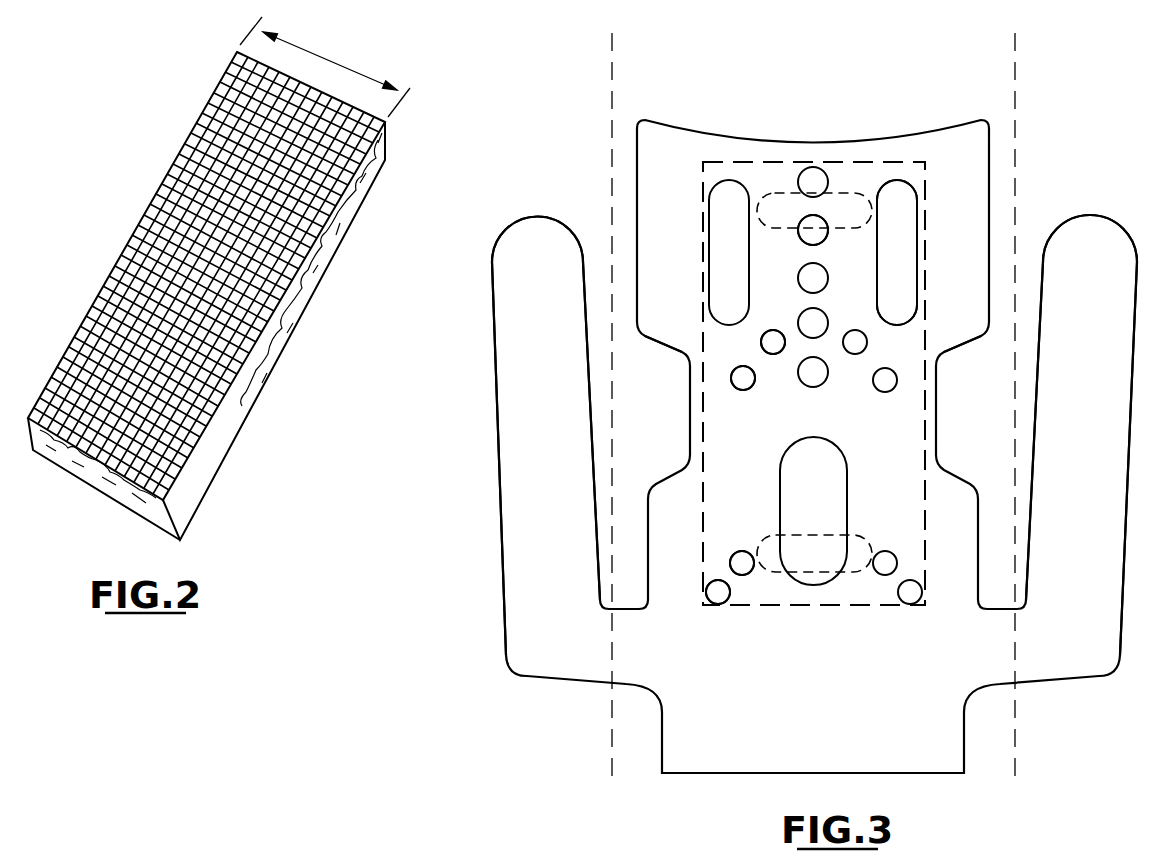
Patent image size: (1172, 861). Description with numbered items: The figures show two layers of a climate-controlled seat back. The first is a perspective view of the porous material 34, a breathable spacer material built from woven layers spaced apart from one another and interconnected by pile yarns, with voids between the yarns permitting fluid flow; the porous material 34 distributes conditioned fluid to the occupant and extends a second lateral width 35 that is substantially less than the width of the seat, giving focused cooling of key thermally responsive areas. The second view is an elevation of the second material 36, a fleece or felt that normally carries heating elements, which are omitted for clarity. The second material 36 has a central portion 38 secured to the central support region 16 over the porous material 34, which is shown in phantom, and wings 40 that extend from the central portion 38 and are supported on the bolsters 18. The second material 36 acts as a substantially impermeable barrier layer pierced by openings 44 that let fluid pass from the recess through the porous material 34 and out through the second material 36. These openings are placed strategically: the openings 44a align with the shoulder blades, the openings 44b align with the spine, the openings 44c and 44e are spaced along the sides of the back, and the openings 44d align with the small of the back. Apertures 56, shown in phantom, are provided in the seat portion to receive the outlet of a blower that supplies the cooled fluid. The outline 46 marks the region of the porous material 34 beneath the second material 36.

In FIG. 3, the central support region 16 is at (722, 110).
In FIG. 3, the bolsters 18 is at (548, 204).
In FIG. 2, the porous material 34 is at (113, 176).
In FIG. 3, the porous material 34 is at (903, 547).
In FIG. 2, the second lateral width 35 is at (325, 53).
In FIG. 3, the second material 36 is at (1002, 124).
In FIG. 3, the central portion 38 is at (670, 330).
In FIG. 3, the wings 40 is at (513, 462).
In FIG. 3, the openings 44 is at (902, 342).
In FIG. 3, the openings 44a is at (885, 180).
In FIG. 3, the openings 44b is at (812, 272).
In FIG. 3, the openings 44c is at (774, 354).
In FIG. 3, the openings 44d is at (820, 455).
In FIG. 3, the openings 44e is at (745, 575).
In FIG. 3, the insert region outline 46 is at (927, 195).
In FIG. 3, the apertures 56 is at (832, 228).